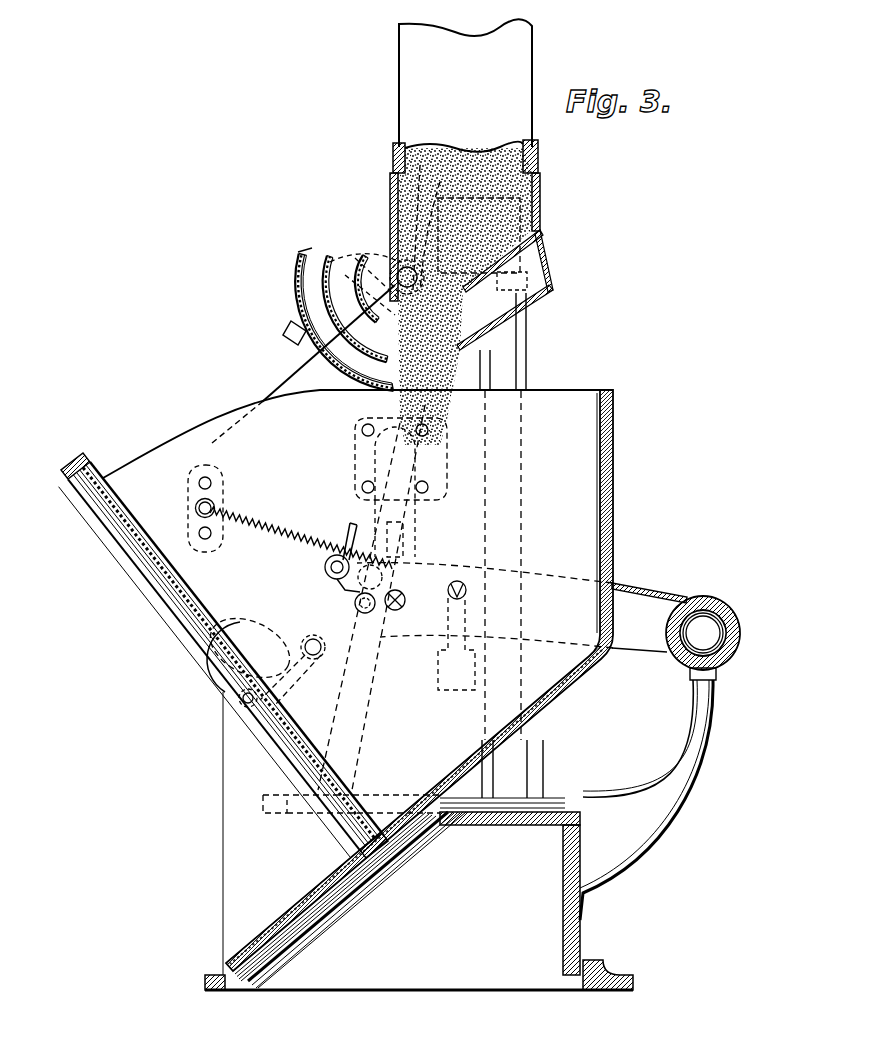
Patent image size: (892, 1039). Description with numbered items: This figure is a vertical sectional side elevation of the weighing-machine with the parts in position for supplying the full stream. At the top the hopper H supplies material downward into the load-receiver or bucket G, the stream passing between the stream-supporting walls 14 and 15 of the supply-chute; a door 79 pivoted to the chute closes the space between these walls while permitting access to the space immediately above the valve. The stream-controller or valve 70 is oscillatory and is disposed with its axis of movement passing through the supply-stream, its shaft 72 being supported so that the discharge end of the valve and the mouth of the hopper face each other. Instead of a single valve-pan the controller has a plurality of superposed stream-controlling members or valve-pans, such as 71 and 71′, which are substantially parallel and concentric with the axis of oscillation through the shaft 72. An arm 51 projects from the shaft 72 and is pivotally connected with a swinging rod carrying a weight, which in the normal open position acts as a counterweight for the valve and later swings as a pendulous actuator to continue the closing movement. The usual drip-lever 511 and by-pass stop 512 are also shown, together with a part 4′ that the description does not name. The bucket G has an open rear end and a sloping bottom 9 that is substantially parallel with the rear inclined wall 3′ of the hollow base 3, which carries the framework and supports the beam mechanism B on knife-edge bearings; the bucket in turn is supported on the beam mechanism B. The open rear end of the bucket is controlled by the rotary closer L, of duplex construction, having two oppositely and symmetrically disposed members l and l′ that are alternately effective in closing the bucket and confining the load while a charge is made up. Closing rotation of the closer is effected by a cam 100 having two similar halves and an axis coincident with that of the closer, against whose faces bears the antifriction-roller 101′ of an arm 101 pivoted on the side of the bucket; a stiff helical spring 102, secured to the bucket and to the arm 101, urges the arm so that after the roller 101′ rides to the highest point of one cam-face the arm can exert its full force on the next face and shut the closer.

The hopper H is at (478, 232).
The arm 51 is at (440, 182).
The stream-supporting wall 14 is at (503, 269).
The door 79 is at (551, 264).
The stream-supporting wall 15 is at (533, 308).
The valve shaft 72 is at (440, 300).
The supports 4′ is at (526, 370).
The valve 70 is at (326, 323).
The valve-pan 71′ is at (340, 265).
The valve-pan 71 is at (386, 262).
The drip-lever 511 is at (290, 373).
The load-receiver G is at (358, 682).
The rotary closer L is at (224, 655).
The closer member l is at (112, 478).
The closer member l′ is at (315, 765).
The spring 102 is at (262, 567).
The by-pass stop 512 is at (343, 537).
The arm 101 is at (303, 670).
The cam 100 is at (184, 672).
The antifriction-roller 101′ is at (246, 704).
The beam mechanism B is at (676, 631).
The base 3 is at (580, 925).
The sloping bottom 9 is at (314, 891).
The rear inclined wall 3′ is at (387, 890).